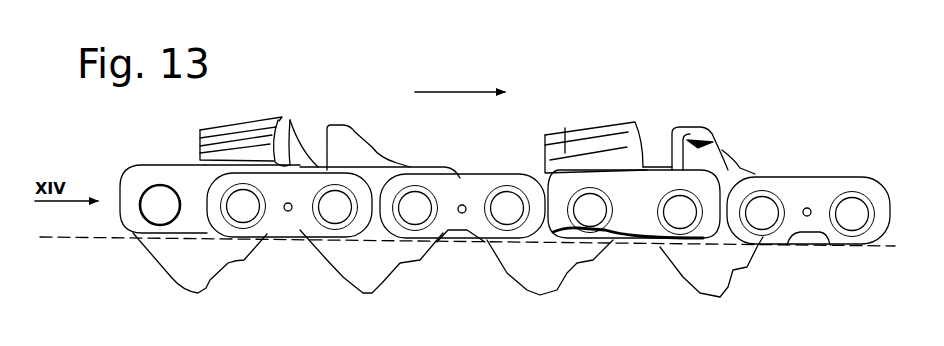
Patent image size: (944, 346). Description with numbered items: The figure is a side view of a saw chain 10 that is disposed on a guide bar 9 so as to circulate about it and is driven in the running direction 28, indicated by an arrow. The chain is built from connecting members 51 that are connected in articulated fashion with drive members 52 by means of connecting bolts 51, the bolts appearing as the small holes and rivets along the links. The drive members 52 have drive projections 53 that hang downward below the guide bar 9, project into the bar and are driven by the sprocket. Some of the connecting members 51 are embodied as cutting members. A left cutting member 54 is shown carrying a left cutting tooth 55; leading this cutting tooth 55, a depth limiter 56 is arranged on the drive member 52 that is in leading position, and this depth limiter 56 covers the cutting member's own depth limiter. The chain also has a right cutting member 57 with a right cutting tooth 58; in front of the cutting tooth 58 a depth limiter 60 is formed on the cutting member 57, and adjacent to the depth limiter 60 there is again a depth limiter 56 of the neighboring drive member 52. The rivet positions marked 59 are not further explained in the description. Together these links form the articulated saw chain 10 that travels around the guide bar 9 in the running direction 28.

The guide bar 9 is at (90, 242).
The saw chain 10 is at (766, 99).
The running direction 28 is at (460, 80).
The connecting member 51 is at (279, 222).
The drive member 52 is at (170, 172).
The drive projection 53 is at (195, 277).
The left cutting member 54 is at (268, 162).
The left cutting tooth 55 is at (280, 127).
The depth limiter 56 is at (350, 137).
The right cutting member 57 is at (630, 212).
The right cutting tooth 58 is at (615, 137).
The rivet bore 59 is at (683, 212).
The depth limiter 60 is at (698, 152).